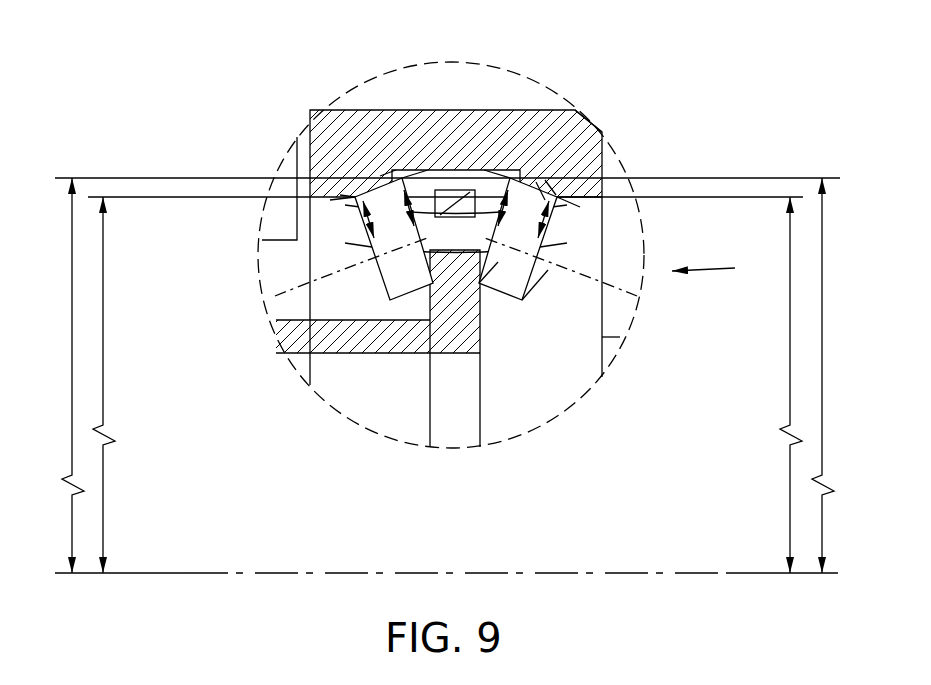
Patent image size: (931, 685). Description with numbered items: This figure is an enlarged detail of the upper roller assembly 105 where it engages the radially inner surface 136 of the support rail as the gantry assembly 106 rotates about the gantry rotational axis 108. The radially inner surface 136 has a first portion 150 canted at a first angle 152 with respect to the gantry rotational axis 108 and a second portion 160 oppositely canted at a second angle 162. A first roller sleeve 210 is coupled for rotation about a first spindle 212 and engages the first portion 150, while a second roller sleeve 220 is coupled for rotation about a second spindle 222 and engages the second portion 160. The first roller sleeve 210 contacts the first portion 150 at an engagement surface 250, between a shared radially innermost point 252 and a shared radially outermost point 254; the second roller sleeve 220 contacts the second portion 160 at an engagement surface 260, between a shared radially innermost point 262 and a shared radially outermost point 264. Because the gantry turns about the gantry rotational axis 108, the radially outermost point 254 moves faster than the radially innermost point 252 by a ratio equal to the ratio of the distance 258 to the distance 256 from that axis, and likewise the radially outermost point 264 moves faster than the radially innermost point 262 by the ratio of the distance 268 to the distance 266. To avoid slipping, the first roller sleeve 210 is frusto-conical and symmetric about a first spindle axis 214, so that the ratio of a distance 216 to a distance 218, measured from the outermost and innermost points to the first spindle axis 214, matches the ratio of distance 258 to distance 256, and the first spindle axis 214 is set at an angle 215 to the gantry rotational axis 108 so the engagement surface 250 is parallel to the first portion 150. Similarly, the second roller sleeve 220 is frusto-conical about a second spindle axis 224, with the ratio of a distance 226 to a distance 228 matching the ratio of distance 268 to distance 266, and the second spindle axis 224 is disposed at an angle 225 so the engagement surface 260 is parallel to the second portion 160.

The upper roller assembly 105 is at (304, 115).
The gantry assembly 106 is at (727, 269).
The gantry rotational axis 108 is at (215, 575).
The radially inner surface 136 is at (418, 406).
The first portion 150 is at (336, 128).
The first angle 152 is at (390, 172).
The second portion 160 is at (553, 175).
The second angle 162 is at (510, 170).
The first roller sleeve 210 is at (309, 385).
The first spindle 212 is at (395, 262).
The first spindle axis 214 is at (275, 296).
The angle 215 is at (300, 353).
The distance 216 is at (422, 168).
The distance 218 is at (365, 240).
The second roller sleeve 220 is at (505, 302).
The second spindle 222 is at (548, 272).
The second spindle axis 224 is at (637, 296).
The angle 225 is at (498, 264).
The distance 226 is at (490, 168).
The distance 228 is at (582, 209).
The engagement surface 250 is at (350, 190).
The radially innermost point 252 is at (345, 203).
The radially outermost point 254 is at (364, 198).
The distance 256 is at (72, 363).
The distance 258 is at (103, 472).
The engagement surface 260 is at (560, 148).
The radially innermost point 262 is at (564, 198).
The radially outermost point 264 is at (543, 195).
The distance 266 is at (822, 363).
The distance 268 is at (790, 500).